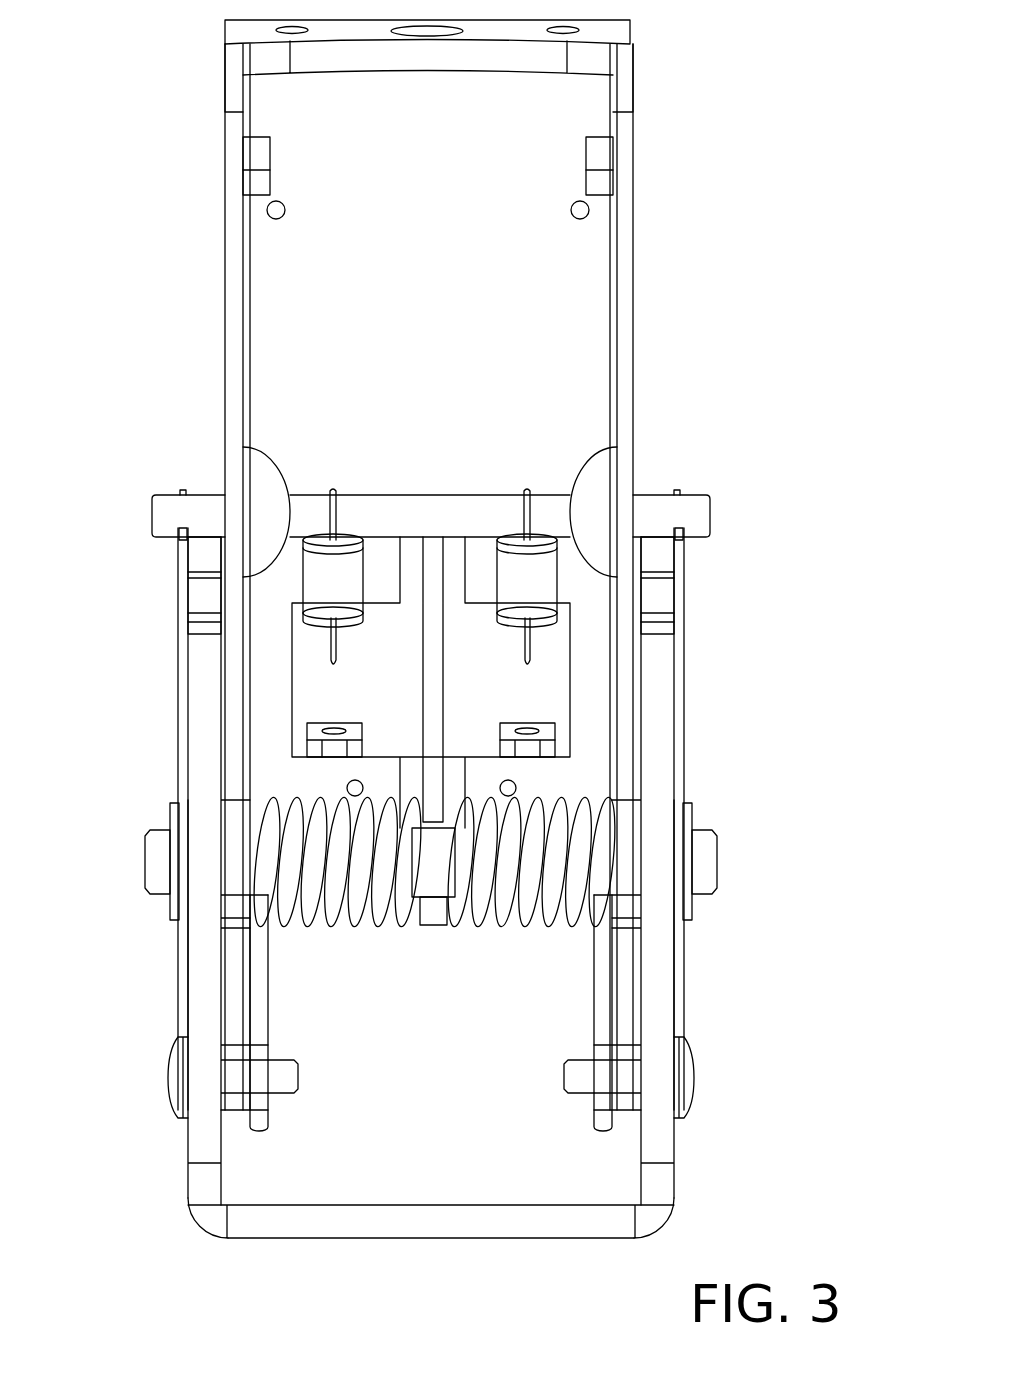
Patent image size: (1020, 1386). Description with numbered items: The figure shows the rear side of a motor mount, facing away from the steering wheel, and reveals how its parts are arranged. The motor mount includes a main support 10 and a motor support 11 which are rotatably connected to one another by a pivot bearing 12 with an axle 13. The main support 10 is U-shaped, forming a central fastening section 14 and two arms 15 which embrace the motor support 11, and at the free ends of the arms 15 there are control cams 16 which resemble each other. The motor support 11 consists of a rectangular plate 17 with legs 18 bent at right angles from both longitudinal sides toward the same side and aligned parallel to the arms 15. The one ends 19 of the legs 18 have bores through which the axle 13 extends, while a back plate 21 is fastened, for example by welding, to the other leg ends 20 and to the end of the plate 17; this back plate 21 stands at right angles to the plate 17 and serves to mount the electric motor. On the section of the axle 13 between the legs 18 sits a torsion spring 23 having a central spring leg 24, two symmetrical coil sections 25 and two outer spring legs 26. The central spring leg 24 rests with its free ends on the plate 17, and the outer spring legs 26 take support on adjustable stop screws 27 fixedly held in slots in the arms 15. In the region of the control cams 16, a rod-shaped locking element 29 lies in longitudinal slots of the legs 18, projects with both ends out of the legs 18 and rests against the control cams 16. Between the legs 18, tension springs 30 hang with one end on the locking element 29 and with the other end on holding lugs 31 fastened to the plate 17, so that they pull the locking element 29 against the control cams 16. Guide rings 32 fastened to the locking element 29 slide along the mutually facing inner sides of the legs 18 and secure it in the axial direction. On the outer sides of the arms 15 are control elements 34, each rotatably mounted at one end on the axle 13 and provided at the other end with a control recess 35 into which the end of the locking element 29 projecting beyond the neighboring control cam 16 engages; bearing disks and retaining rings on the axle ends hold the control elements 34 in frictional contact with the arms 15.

The main support 10 is at (431, 1258).
The motor support 11 is at (228, 225).
The pivot bearing 12 is at (138, 837).
The axle 13 is at (140, 870).
The central fastening section 14 is at (445, 1240).
The arms 15 is at (195, 988).
The control cams 16 is at (203, 603).
The plate 17 is at (300, 300).
The legs 18 is at (240, 170).
The one ends 19 is at (235, 742).
The other leg ends 20 is at (230, 103).
The back plate 21 is at (614, 30).
The torsion spring 23 is at (434, 893).
The central spring leg 24 is at (458, 768).
The coil sections 25 is at (322, 920).
The outer spring legs 26 is at (265, 1127).
The stop screws 27 is at (175, 1075).
The locking element 29 is at (165, 510).
The tension springs 30 is at (345, 565).
The holding lugs 31 is at (548, 735).
The guide rings 32 is at (255, 480).
The control elements 34 is at (183, 655).
The control recess 35 is at (182, 550).